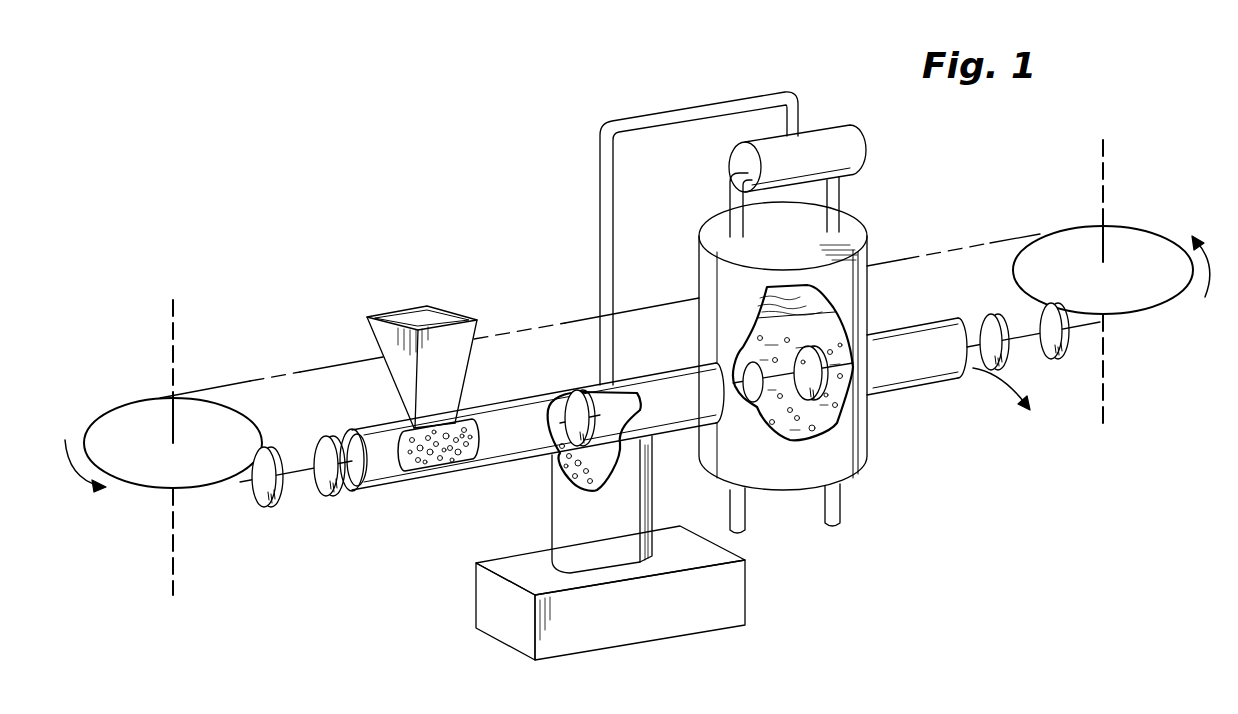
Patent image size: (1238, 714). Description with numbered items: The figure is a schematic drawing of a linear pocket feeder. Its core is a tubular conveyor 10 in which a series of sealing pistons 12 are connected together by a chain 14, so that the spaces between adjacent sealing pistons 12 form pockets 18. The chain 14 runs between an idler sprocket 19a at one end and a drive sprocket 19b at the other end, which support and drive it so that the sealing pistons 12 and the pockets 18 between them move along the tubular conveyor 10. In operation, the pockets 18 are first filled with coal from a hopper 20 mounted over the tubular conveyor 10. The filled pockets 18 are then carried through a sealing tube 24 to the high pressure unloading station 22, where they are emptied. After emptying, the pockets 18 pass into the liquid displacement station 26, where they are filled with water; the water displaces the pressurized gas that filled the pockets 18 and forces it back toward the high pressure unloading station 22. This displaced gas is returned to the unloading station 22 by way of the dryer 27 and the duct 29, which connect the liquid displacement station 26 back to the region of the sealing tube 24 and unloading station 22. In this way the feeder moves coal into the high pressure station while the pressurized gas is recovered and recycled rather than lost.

The tubular conveyor 10 is at (372, 410).
The sealing pistons 12 is at (263, 497).
The chain 14 is at (308, 367).
The pockets 18 is at (306, 478).
The idler sprocket 19a is at (135, 415).
The drive sprocket 19b is at (1153, 240).
The hopper 20 is at (458, 356).
The high pressure unloading station 22 is at (550, 517).
The sealing tube 24 is at (660, 370).
The liquid displacement station 26 is at (878, 232).
The dryer 27 is at (817, 148).
The duct 29 is at (700, 108).